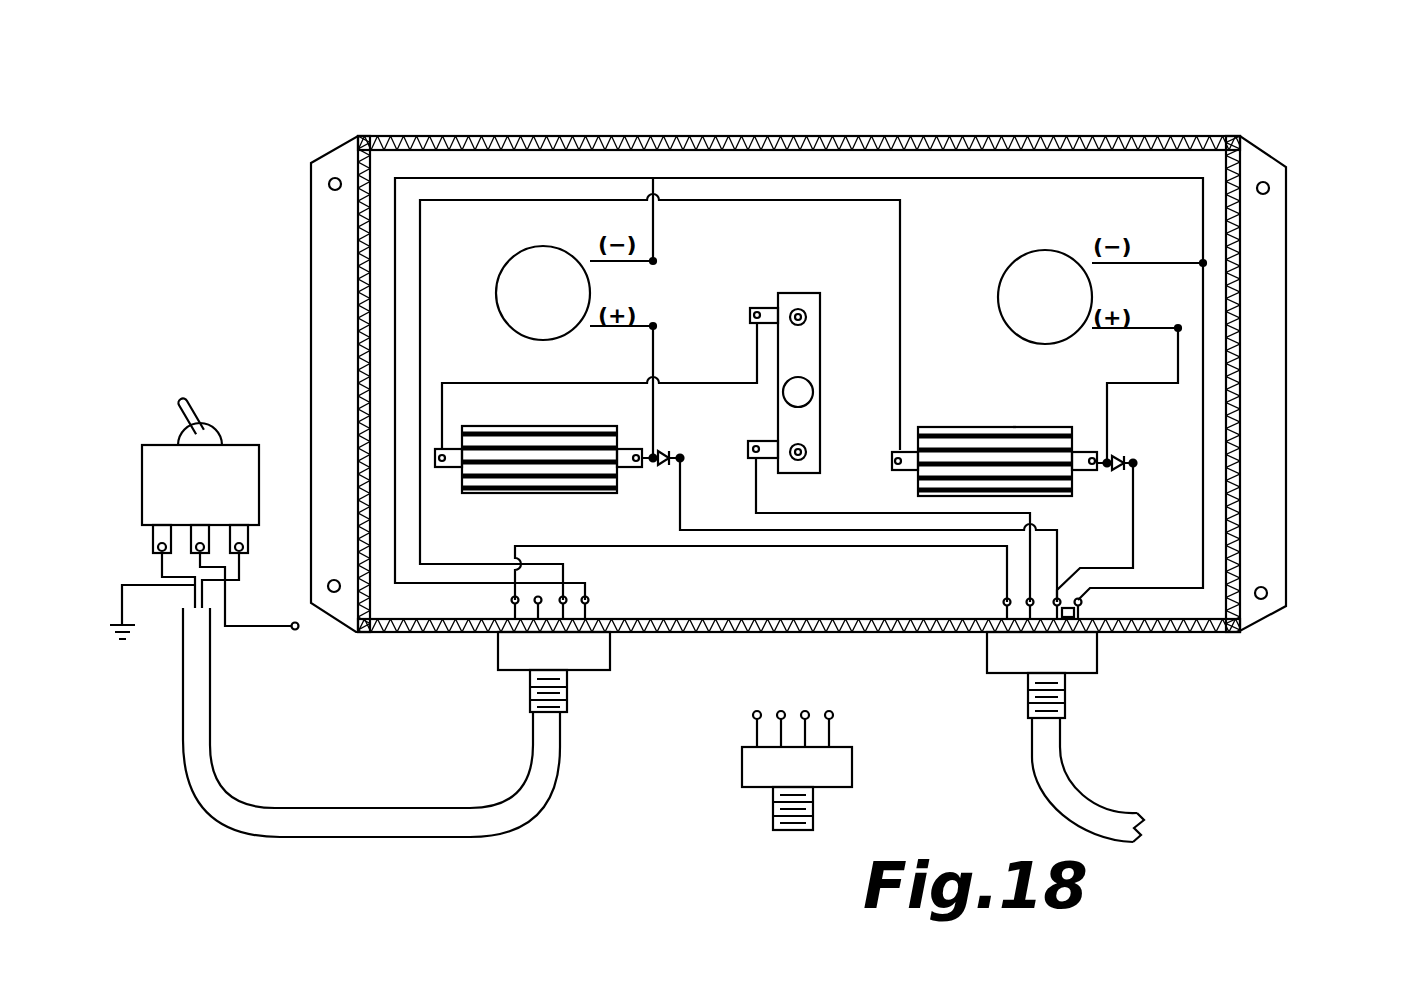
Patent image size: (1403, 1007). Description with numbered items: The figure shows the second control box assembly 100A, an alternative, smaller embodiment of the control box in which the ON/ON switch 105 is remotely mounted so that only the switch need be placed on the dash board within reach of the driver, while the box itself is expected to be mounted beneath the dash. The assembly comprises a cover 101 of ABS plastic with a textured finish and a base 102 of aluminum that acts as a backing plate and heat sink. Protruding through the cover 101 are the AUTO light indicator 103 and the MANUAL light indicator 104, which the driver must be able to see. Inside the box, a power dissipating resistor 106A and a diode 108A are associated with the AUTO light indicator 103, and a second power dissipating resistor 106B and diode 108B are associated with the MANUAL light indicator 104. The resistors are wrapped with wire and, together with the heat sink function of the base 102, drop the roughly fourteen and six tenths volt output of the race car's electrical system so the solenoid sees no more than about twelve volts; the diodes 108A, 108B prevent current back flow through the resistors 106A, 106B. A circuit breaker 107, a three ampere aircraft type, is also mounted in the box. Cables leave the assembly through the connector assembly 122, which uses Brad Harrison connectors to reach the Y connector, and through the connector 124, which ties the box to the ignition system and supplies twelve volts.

The second control box assembly 100A is at (930, 137).
The cover 101 is at (1260, 257).
The base 102 is at (1283, 400).
The AUTO light indicator 103 is at (543, 246).
The MANUAL light indicator 104 is at (1045, 250).
The ON/ON switch 105 is at (222, 420).
The power dissipating resistor 106A is at (500, 426).
The power dissipating resistor 106B is at (1013, 427).
The circuit breaker 107 is at (792, 293).
The diode 108A is at (661, 470).
The diode 108B is at (1128, 450).
The connector assembly 122 is at (1065, 765).
The connector 124 is at (565, 745).